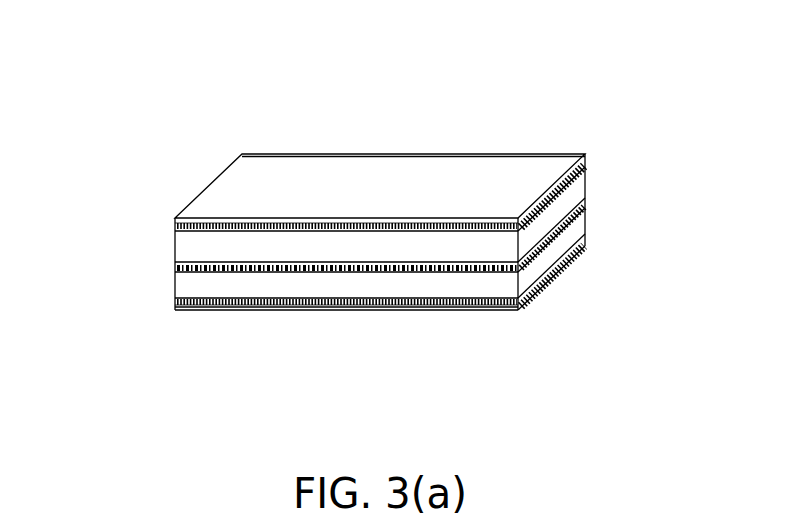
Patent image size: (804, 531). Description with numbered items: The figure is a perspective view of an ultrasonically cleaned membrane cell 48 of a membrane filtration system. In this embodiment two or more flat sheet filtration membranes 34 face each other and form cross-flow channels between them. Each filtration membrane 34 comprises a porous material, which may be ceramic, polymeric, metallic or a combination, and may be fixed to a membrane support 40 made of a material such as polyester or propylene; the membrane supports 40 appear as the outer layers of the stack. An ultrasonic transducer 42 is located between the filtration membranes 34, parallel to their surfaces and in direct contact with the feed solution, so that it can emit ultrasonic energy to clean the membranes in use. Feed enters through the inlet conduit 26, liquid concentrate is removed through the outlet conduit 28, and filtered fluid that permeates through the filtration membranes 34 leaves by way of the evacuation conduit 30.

The membrane cell 48 is at (382, 189).
The membrane support 40 is at (352, 225).
The ultrasonic transducer 42 is at (413, 267).
The flat sheet filtration membrane 34 is at (473, 232).
The inlet conduit 26 is at (572, 194).
The outlet conduit 28 is at (170, 216).
The evacuation conduit 30 is at (203, 190).